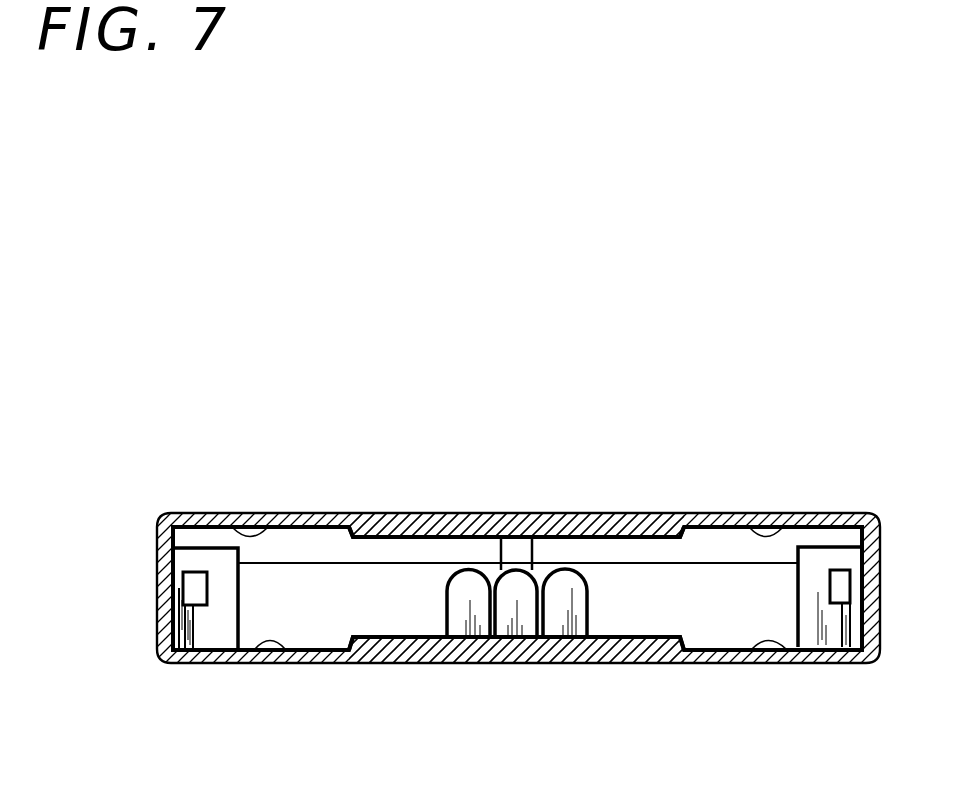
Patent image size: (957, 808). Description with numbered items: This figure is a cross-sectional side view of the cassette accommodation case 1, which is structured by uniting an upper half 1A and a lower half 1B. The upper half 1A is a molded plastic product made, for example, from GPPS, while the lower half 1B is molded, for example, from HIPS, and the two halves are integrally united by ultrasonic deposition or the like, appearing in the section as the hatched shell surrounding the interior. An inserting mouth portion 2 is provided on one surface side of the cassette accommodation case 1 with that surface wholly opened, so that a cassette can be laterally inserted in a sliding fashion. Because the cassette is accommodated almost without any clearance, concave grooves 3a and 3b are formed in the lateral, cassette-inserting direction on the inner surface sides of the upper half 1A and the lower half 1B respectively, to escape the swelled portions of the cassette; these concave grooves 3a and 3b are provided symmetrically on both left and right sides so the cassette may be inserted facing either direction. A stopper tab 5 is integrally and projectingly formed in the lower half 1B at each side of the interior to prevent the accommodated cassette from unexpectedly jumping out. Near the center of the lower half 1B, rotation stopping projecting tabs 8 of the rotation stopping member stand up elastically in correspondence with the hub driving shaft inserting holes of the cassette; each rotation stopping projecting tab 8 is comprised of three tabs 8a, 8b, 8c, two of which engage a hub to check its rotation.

The cassette accommodation case 1 is at (308, 515).
The upper half 1A is at (385, 526).
The lower half 1B is at (395, 651).
The inserting mouth portion 2 is at (675, 595).
The concave groove 3a is at (232, 528).
The concave groove 3b is at (252, 649).
The stopper tab 5 is at (183, 592).
The rotation stopping projecting tab 8 is at (618, 425).
The tab 8a is at (565, 585).
The tab 8b is at (518, 585).
The tab 8c is at (468, 585).